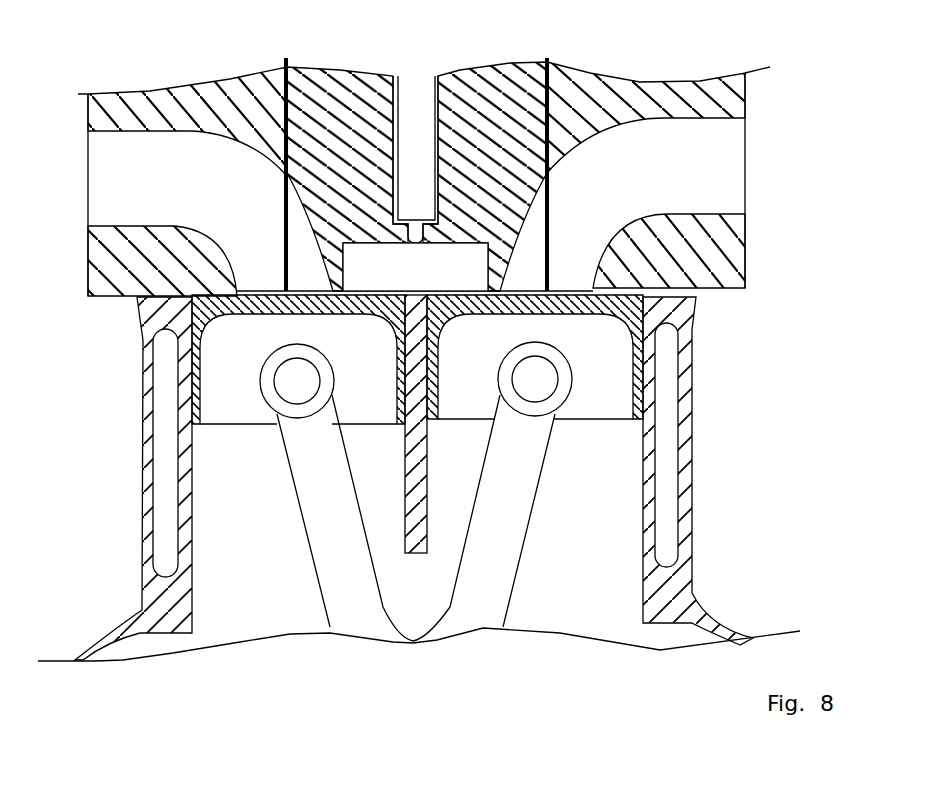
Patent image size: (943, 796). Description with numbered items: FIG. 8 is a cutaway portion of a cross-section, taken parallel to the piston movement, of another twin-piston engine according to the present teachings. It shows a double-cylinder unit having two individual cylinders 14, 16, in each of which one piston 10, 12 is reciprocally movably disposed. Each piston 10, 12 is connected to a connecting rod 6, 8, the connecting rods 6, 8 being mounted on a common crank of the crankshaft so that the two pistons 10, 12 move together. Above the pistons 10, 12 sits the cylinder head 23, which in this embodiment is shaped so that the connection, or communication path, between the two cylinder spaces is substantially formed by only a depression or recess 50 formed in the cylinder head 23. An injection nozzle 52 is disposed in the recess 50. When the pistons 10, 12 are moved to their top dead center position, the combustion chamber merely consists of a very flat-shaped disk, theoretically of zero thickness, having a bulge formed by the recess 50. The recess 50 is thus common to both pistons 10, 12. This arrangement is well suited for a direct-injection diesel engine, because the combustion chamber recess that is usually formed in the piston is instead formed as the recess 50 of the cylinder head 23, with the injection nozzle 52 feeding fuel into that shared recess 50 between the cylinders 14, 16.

The cylinder head 23 is at (587, 92).
The injection nozzle 52 is at (405, 102).
The recess 50 is at (377, 262).
The piston 12 is at (215, 398).
The piston 10 is at (600, 398).
The individual cylinder 16 is at (228, 512).
The individual cylinder 14 is at (587, 502).
The connecting rod 8 is at (352, 588).
The connecting rod 6 is at (487, 580).